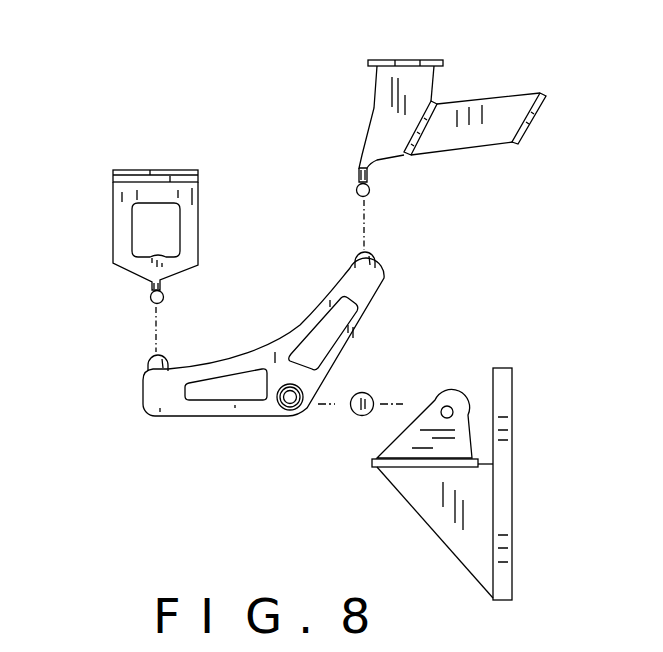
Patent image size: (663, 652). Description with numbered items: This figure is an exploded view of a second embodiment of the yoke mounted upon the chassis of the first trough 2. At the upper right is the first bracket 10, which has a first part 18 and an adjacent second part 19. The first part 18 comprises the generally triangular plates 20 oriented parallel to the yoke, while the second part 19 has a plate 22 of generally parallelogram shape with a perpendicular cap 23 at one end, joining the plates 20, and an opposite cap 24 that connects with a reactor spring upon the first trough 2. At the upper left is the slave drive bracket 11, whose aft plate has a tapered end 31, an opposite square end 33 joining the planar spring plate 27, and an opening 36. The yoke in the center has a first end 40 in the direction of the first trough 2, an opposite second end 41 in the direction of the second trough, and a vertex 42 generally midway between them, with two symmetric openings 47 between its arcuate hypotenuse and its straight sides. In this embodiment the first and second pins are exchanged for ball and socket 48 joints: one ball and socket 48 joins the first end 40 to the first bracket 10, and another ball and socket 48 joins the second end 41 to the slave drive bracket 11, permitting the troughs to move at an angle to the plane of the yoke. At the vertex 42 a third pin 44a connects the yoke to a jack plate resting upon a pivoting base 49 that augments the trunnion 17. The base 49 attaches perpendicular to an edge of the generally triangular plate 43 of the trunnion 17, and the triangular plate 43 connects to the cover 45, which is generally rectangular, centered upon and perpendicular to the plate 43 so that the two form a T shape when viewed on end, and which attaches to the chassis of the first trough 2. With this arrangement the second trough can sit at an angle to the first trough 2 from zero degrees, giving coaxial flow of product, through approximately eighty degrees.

The first trough 2 is at (413, 61).
The first bracket 10 is at (566, 92).
The slave drive bracket 11 is at (96, 206).
The trunnion 17 is at (392, 434).
The first part 18 is at (364, 89).
The second part 19 is at (465, 169).
The triangular plates 20 is at (387, 135).
The plate 22 is at (508, 110).
The perpendicular cap 23 is at (438, 102).
The opposite cap 24 is at (540, 107).
The spring plate 27 is at (168, 181).
The tapered end 31 is at (170, 268).
The square end 33 is at (195, 190).
The opening 36 is at (165, 228).
The first end 40 is at (384, 286).
The second end 41 is at (152, 416).
The vertex 42 is at (303, 410).
The triangular plate 43 is at (437, 507).
The third pin 44a is at (363, 392).
The cover 45 is at (503, 385).
The openings 47 is at (328, 333).
The ball and socket joints 48 is at (370, 192).
The pivoting base 49 is at (400, 471).